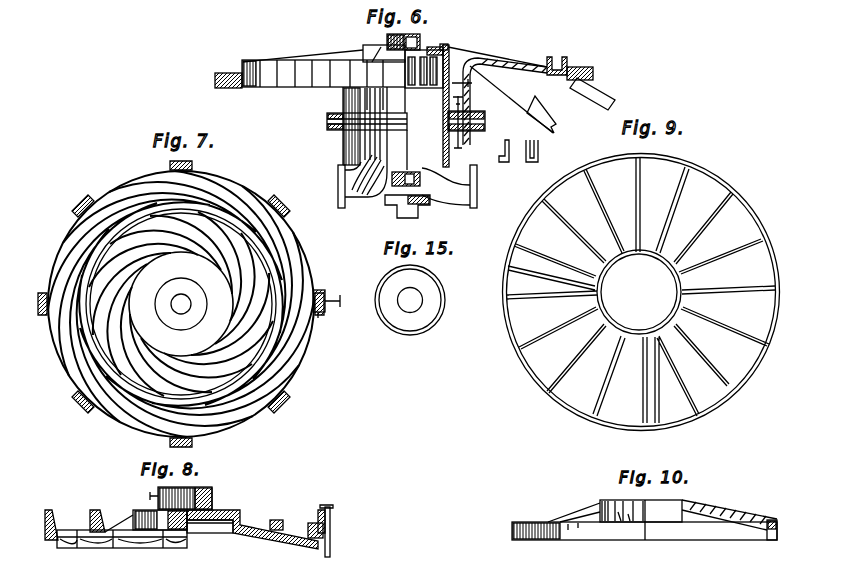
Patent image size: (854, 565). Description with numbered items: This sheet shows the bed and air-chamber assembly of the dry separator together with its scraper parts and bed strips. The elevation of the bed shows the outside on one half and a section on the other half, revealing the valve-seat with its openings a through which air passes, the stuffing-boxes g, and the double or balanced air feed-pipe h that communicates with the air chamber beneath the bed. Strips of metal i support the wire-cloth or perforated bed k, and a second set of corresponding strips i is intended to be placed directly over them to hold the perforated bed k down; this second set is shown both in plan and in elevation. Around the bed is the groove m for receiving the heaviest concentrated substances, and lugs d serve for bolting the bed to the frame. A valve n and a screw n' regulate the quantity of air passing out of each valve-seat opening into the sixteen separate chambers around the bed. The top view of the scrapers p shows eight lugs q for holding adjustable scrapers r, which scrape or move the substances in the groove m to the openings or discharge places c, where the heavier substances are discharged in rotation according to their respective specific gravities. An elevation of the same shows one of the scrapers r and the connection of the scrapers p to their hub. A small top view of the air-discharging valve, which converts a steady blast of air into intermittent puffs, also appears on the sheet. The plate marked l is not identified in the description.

In FIG. 6, the lugs d is at (404, 70).
In FIG. 6, the stuffing-boxes g is at (403, 110).
In FIG. 6, the air feed-pipe h is at (407, 126).
In FIG. 6, the openings in the valve-seat a is at (422, 71).
In FIG. 6, the valve n is at (461, 89).
In FIG. 6, the screw n' is at (459, 130).
In FIG. 6, the pipe / plate l is at (508, 96).
In FIG. 6, the wire-cloth or perforated bed k is at (541, 114).
In FIG. 6, the groove m is at (557, 66).
In FIG. 6, the openings for discharge c is at (592, 94).
In FIG. 7, the scrapers p is at (181, 304).
In FIG. 8, the scrapers p is at (122, 539).
In FIG. 7, the lugs q is at (172, 307).
In FIG. 8, the lugs q is at (324, 524).
In FIG. 7, the adjustable scrapers r is at (326, 307).
In FIG. 8, the adjustable scrapers r is at (329, 531).
In FIG. 9, the strips of metal i is at (643, 197).
In FIG. 10, the strips of metal i is at (729, 520).